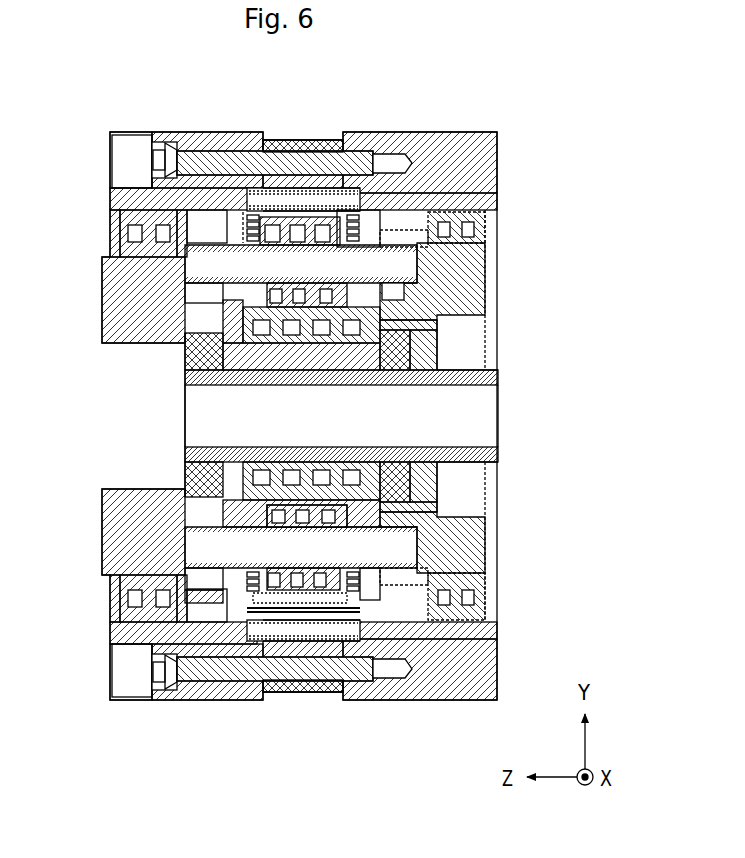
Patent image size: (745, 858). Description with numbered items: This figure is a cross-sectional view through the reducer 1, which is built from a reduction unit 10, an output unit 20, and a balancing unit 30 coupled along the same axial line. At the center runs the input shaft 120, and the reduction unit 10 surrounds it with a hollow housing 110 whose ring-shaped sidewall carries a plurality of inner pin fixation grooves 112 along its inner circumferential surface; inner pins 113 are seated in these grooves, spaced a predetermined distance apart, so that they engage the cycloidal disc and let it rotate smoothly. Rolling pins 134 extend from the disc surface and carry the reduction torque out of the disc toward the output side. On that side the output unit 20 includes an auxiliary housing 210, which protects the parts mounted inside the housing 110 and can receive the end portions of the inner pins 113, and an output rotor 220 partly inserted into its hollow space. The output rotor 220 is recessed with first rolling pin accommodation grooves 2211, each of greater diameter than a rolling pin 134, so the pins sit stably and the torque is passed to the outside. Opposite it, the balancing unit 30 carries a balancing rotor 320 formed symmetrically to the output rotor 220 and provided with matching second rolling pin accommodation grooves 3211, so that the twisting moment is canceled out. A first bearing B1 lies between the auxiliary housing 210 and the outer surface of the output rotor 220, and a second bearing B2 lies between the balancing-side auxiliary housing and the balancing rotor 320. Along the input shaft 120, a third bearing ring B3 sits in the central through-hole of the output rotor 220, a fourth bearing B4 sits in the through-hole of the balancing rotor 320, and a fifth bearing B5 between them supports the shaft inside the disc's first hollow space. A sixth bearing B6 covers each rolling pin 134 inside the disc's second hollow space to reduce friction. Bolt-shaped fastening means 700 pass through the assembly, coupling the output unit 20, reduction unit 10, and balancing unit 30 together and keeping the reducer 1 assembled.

The reducer 1 is at (71, 144).
The reduction unit 10 is at (309, 117).
The output unit 20 is at (215, 117).
The balancing unit 30 is at (499, 117).
The housing 110 is at (303, 642).
The inner pin fixation grooves 112 is at (365, 150).
The inner pins 113 is at (358, 190).
The input shaft 120 is at (489, 462).
The rolling pins 134 is at (236, 237).
The auxiliary housing to the side of the output unit 210 is at (117, 115).
The output rotor 220 is at (95, 302).
The first rolling pin accommodation grooves 2211 is at (192, 290).
The balancing rotor 320 is at (489, 299).
The second rolling pin accommodation grooves 3211 is at (409, 292).
The fastening means 700 is at (186, 157).
The first bearing B1 is at (140, 234).
The second bearing B2 is at (464, 233).
The third bearing ring B3 is at (190, 350).
The fourth bearing B4 is at (409, 350).
The fifth bearing B5 is at (395, 325).
The sixth bearing B6 is at (336, 228).